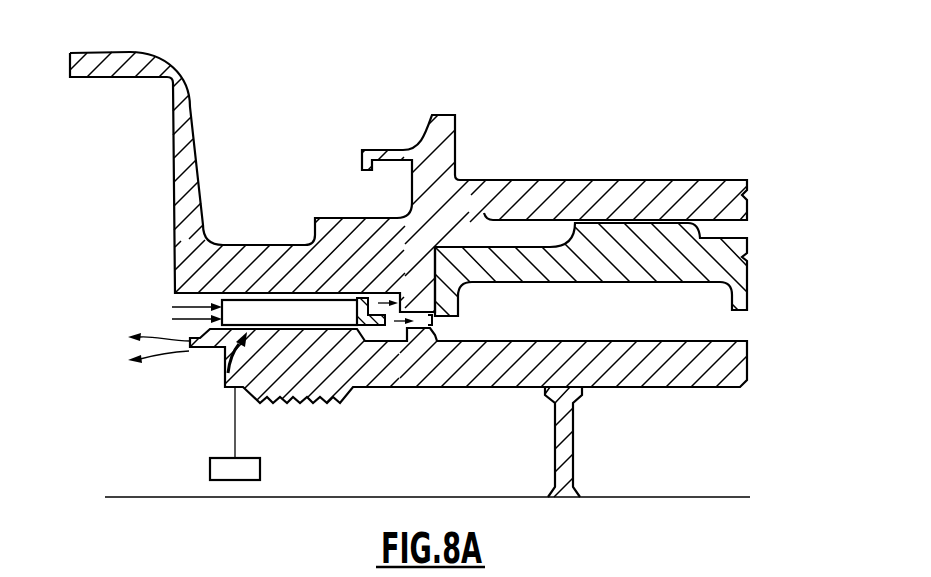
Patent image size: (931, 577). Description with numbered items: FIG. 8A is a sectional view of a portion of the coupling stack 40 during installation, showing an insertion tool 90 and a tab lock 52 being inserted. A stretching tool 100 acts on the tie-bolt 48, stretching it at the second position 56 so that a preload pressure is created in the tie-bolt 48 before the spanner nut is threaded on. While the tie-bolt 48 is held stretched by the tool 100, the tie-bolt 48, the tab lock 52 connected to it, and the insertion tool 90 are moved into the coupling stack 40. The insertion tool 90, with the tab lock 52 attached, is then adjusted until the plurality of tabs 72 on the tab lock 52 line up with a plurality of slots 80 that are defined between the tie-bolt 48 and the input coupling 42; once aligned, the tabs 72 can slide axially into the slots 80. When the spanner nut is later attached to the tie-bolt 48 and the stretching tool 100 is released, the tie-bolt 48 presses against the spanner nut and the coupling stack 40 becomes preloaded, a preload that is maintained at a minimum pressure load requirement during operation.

The coupling stack 40 is at (408, 158).
The input coupling 42 is at (441, 186).
The tie-bolt 48 is at (606, 363).
The tab lock 52 is at (365, 298).
The second position 56 is at (225, 350).
The tabs 72 is at (385, 328).
The slots 80 is at (432, 320).
The insertion tool 90 is at (285, 313).
The stretching tool 100 is at (260, 472).